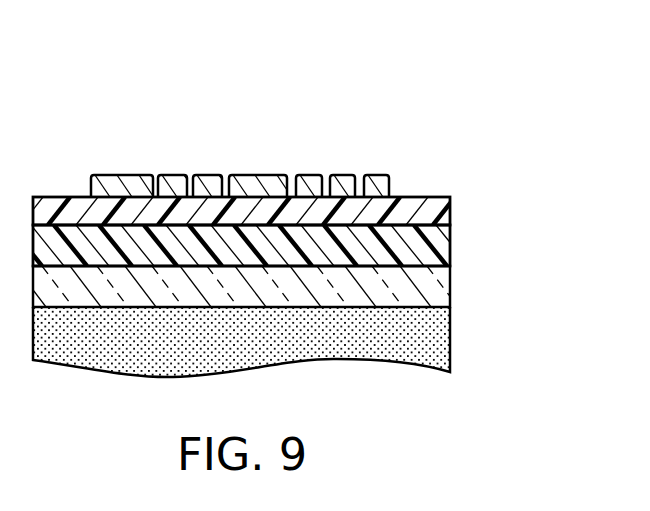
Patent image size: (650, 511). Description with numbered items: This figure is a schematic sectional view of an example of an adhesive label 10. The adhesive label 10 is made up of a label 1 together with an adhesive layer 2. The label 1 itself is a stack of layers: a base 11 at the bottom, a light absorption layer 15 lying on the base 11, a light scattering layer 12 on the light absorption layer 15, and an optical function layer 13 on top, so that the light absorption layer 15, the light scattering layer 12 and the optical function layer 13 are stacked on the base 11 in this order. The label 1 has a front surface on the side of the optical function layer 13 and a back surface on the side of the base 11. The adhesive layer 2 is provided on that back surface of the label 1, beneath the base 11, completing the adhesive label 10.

The adhesive label 10 is at (510, 128).
The label 1 is at (546, 166).
The optical function layer 13 is at (388, 188).
The light scattering layer 12 is at (450, 207).
The light absorption layer 15 is at (444, 240).
The base 11 is at (442, 286).
The adhesive layer 2 is at (447, 340).